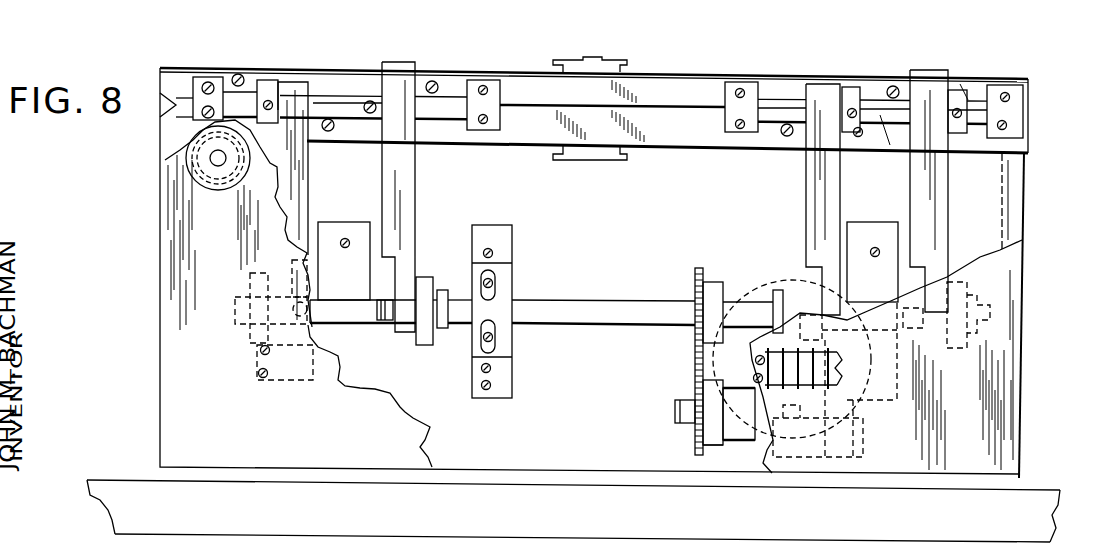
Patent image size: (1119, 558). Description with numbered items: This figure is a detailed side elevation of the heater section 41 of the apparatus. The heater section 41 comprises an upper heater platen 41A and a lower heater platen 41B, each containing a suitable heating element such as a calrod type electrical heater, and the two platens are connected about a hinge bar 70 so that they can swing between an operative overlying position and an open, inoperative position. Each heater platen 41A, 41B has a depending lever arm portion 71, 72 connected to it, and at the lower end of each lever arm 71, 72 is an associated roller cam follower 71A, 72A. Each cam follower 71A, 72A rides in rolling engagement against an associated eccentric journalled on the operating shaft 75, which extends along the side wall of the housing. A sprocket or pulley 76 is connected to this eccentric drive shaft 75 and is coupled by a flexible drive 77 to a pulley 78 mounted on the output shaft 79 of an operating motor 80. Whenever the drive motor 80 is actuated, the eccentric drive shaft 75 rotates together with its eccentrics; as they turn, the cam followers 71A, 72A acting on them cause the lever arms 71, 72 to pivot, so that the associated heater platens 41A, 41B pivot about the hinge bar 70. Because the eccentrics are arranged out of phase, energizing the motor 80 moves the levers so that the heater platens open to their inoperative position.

The heater section 41 is at (762, 66).
The upper heater platen 41A is at (661, 87).
The lower heater platen 41B is at (643, 132).
The hinge bar 70 is at (445, 103).
The lever arm portion 71 is at (400, 180).
The roller cam follower 71A is at (960, 342).
The lever arm portion 72 is at (298, 182).
The roller cam follower 72A is at (257, 277).
The operating shaft 75 is at (555, 300).
The sprocket or pulley 76 is at (695, 278).
The gear 77 is at (694, 360).
The pulley 78 is at (694, 443).
The output shaft 79 is at (676, 412).
The operating motor 80 is at (712, 447).